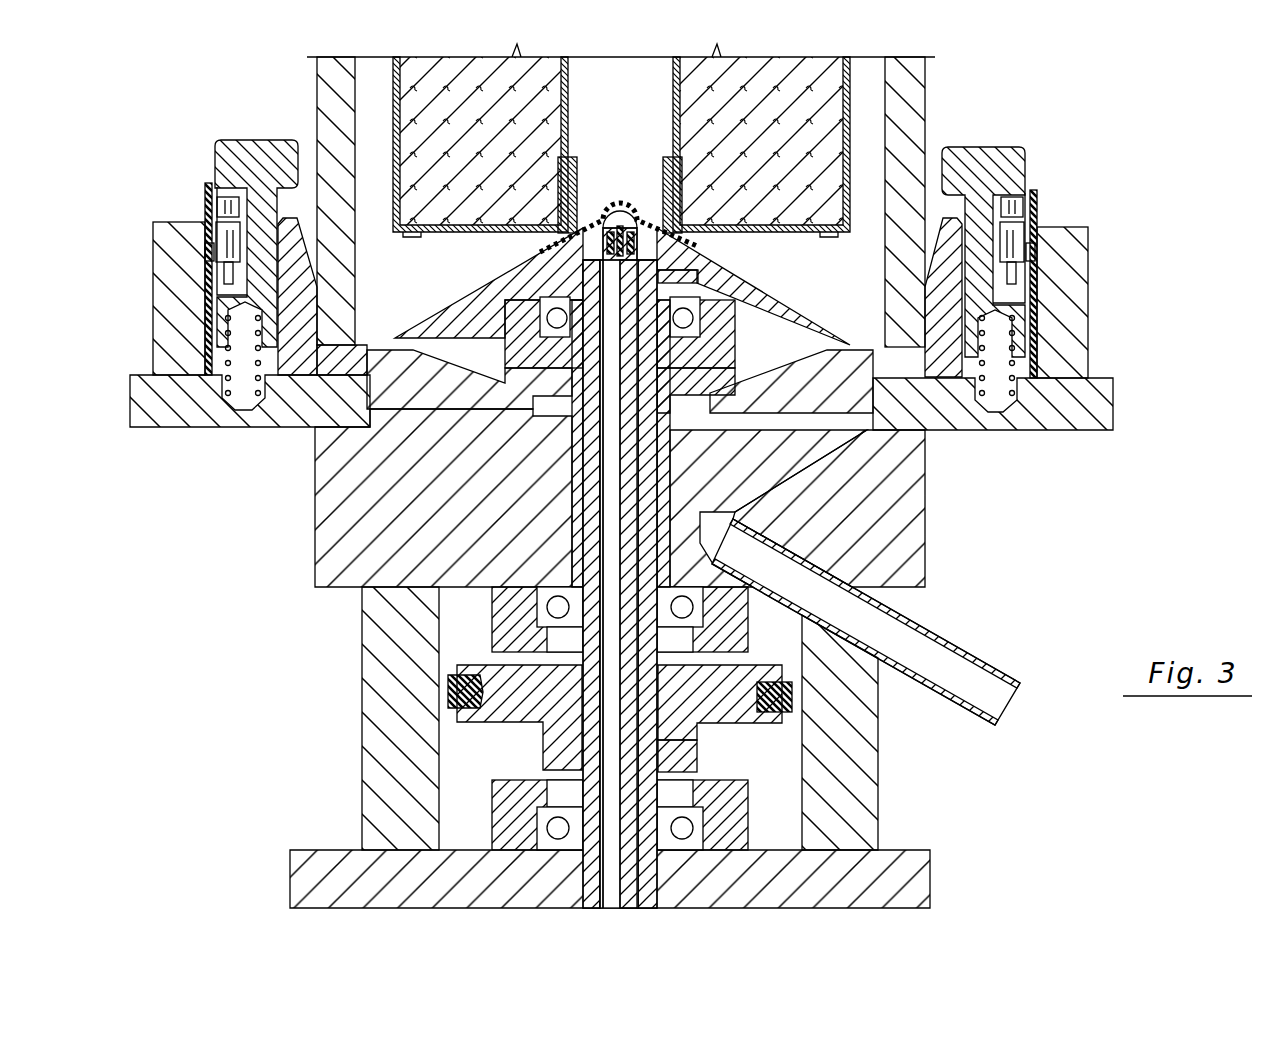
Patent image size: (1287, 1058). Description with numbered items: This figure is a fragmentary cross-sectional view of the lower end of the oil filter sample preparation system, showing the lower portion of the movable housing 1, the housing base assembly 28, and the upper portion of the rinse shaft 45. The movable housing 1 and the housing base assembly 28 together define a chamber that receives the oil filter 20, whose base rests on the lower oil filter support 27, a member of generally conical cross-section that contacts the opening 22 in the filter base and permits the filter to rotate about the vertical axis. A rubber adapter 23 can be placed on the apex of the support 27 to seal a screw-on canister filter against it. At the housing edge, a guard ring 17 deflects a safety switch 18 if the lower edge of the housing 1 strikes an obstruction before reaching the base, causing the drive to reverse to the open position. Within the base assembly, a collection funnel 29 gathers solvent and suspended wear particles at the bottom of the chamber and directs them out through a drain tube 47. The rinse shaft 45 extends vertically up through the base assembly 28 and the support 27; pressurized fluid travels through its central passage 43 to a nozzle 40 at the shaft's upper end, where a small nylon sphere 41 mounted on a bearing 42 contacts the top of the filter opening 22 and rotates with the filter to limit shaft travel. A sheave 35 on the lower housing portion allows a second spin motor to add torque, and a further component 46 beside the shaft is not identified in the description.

The movable housing 1 is at (343, 183).
The guard ring 17 is at (243, 157).
The safety switch 18 is at (228, 240).
The oil filter 20 is at (436, 182).
The opening 22 is at (601, 97).
The rubber adapter 23 is at (666, 222).
The lower oil filter support 27 is at (772, 323).
The housing base assembly 28 is at (310, 240).
The collection funnel 29 is at (413, 365).
The sheave 35 is at (793, 700).
The nozzle 40 is at (520, 262).
The nylon sphere 41 is at (604, 228).
The bearing 42 is at (621, 220).
The central passage 43 is at (680, 275).
The rinse shaft 45 is at (625, 463).
The inner shaft 46 is at (640, 489).
The drain tube 47 is at (955, 643).